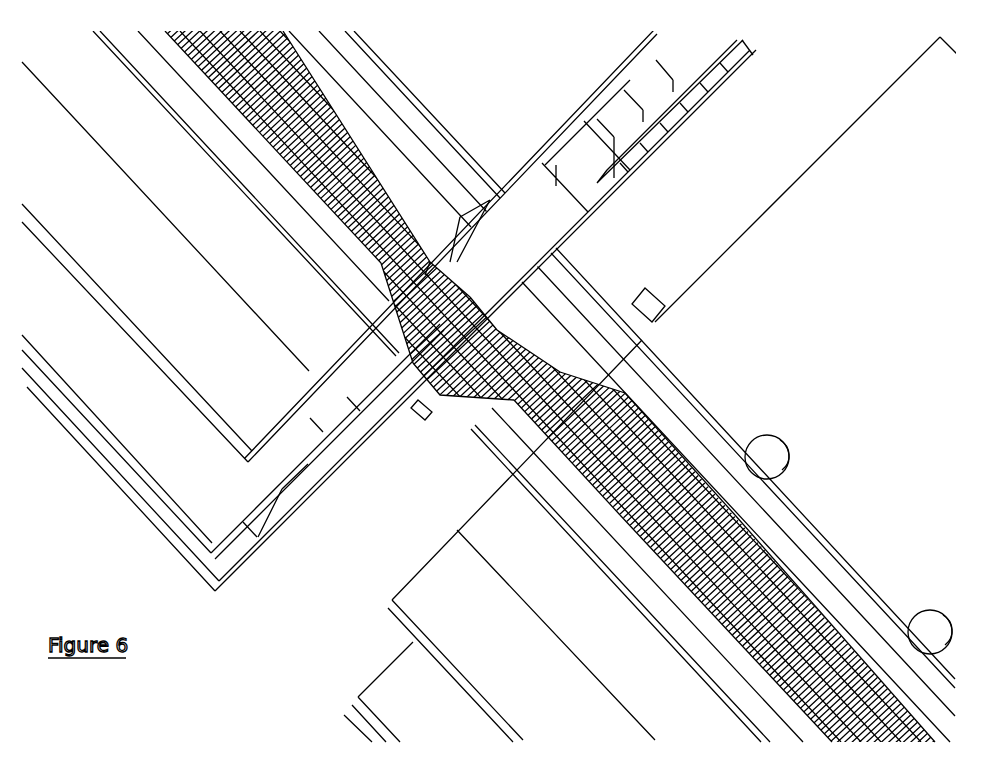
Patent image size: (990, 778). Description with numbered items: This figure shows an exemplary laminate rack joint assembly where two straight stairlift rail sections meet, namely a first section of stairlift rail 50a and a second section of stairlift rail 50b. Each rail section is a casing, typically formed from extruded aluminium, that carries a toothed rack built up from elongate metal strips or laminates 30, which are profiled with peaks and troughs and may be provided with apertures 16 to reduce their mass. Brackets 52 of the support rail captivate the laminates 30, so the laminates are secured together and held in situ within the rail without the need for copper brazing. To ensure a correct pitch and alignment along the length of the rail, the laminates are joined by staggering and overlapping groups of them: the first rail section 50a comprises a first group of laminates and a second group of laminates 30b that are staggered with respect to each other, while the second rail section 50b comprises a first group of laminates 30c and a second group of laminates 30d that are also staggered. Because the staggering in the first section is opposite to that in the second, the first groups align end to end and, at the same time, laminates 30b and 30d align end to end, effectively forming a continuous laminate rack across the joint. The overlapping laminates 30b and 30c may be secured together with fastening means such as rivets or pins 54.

The apertures 16 is at (438, 368).
The laminates 30 is at (493, 415).
The second group of laminates 30b is at (338, 228).
The first group of laminates 30c is at (632, 392).
The second group of laminates 30d is at (636, 538).
The first section of stairlift rail 50a is at (672, 132).
The second section of stairlift rail 50b is at (753, 222).
The brackets 52 is at (418, 262).
The rivets or pins 54 is at (656, 298).